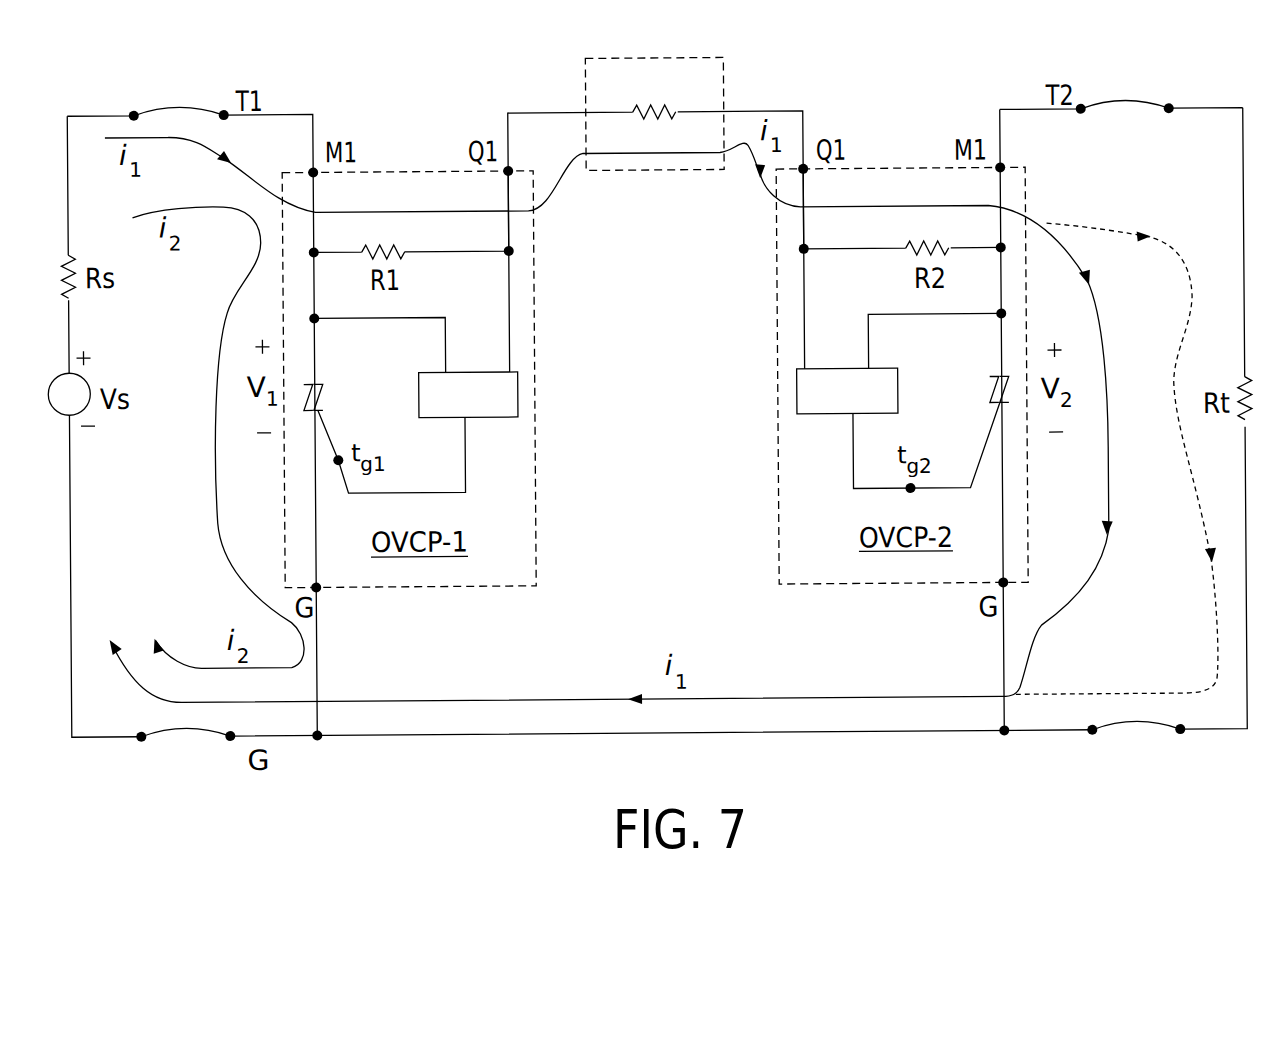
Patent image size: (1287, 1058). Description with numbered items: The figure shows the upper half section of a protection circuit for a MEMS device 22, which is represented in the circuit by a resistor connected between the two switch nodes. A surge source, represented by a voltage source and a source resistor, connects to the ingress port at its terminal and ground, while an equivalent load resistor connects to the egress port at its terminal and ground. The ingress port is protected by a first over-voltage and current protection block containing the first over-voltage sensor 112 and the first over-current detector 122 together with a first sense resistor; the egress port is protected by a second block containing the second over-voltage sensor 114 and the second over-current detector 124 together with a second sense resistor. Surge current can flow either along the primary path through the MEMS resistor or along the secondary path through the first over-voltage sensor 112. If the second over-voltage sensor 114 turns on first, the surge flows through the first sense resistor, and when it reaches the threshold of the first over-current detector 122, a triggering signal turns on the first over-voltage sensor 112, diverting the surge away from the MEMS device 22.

The MEMS device 22 is at (727, 85).
The OVS1 112 is at (353, 373).
The OVS2 114 is at (963, 375).
The OCD1 122 is at (477, 370).
The OCD2 124 is at (840, 368).